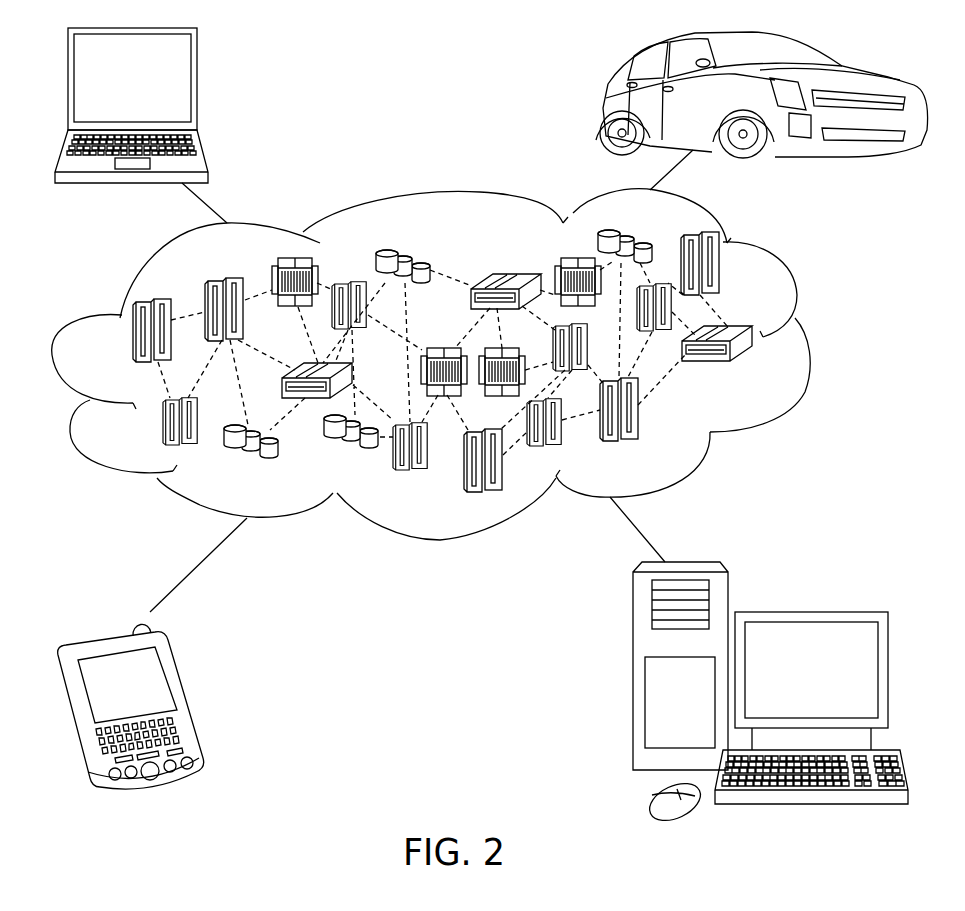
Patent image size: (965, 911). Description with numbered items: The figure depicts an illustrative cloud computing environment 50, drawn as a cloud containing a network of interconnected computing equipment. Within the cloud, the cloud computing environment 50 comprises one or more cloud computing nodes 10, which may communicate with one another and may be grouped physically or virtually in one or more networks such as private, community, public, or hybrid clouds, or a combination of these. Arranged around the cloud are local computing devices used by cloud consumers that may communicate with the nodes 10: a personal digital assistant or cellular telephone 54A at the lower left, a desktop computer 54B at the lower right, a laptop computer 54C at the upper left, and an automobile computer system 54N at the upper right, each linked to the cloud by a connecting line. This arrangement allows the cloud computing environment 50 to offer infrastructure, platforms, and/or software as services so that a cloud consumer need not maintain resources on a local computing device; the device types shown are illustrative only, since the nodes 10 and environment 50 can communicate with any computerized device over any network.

The laptop computer 54C is at (197, 87).
The automobile computer system 54N is at (606, 103).
The personal digital assistant (PDA) or cellular telephone 54A is at (186, 698).
The desktop computer 54B is at (808, 612).
The cloud computing environment 50 is at (811, 343).
The cloud computing nodes 10 is at (757, 367).